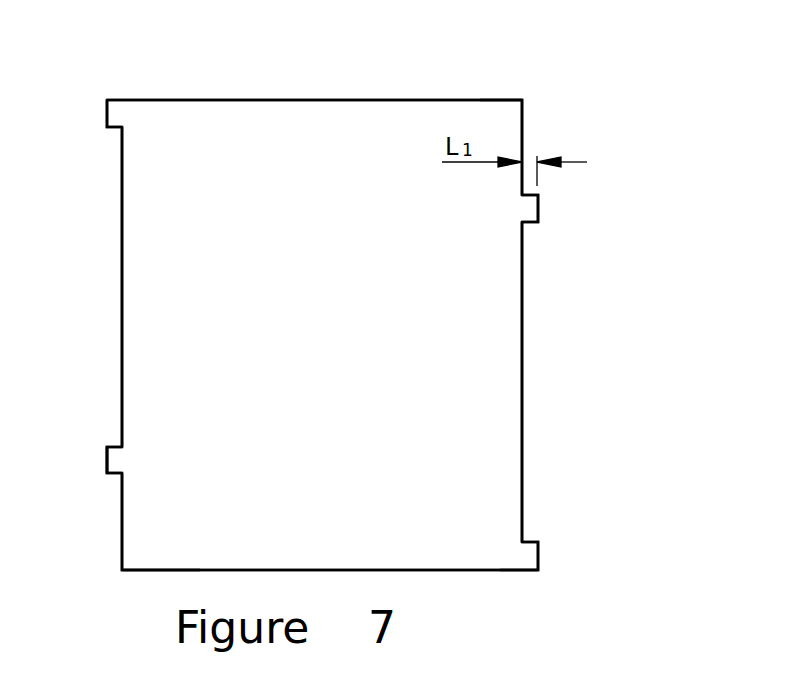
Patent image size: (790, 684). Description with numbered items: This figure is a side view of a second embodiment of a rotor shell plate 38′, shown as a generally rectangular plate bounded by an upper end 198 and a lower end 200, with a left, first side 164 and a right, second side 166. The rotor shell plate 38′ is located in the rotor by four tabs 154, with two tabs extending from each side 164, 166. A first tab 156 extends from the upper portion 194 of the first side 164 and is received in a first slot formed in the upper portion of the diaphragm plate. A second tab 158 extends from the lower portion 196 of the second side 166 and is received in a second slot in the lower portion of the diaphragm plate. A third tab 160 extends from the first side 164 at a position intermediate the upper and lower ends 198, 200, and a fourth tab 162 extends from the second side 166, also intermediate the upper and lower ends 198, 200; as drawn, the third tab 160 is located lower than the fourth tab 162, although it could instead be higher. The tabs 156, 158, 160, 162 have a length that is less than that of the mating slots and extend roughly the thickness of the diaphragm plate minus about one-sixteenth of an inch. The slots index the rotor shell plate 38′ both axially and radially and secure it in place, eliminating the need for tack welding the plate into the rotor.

The rotor shell plate 38′ is at (657, 137).
The upper end 198 is at (283, 100).
The first tab 156 is at (113, 110).
The first side 164 is at (122, 212).
The tabs 154 is at (107, 455).
The third tab 160 is at (112, 461).
The lower portion 196 is at (152, 525).
The upper portion 194 is at (508, 138).
The fourth tab 162 is at (528, 206).
The second side 166 is at (522, 312).
The second tab 158 is at (527, 553).
The lower end 200 is at (413, 570).